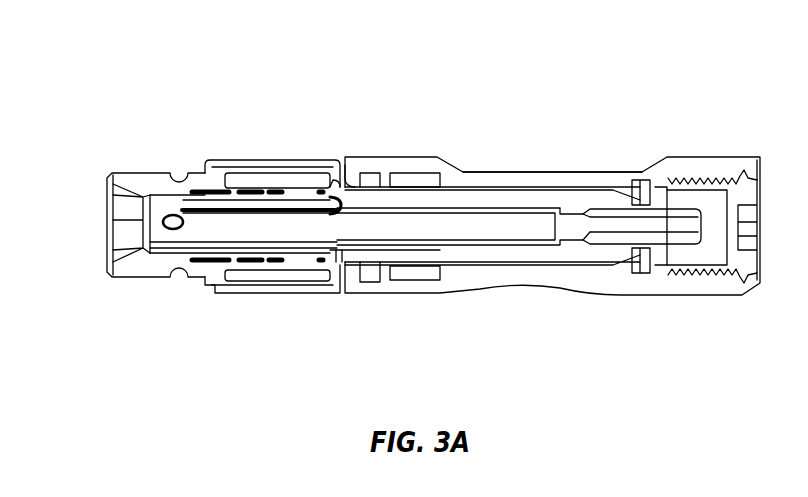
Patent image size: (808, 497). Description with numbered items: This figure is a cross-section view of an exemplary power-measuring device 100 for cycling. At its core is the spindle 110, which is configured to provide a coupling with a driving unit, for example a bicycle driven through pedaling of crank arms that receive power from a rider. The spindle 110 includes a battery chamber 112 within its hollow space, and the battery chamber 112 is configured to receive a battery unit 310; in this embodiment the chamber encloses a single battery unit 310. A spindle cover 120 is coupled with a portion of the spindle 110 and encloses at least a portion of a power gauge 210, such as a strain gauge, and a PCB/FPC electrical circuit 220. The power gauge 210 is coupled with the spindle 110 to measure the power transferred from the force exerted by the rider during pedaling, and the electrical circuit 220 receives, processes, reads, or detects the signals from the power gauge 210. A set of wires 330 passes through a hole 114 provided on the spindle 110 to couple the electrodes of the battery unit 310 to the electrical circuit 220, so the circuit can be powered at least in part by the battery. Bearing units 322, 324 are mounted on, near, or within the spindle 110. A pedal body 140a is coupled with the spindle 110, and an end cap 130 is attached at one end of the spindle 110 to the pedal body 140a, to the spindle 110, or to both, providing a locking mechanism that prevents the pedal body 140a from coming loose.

The power-measuring device 100 is at (769, 37).
The spindle 110 is at (202, 257).
The battery chamber 112 is at (160, 227).
The hole 114 is at (333, 203).
The spindle cover 120 is at (230, 160).
The end cap 130 is at (697, 268).
The pedal body 140a is at (540, 180).
The power gauge 210 is at (197, 167).
The electrical circuit 220 is at (250, 180).
The battery unit 310 is at (435, 233).
The bearing unit 322 is at (420, 275).
The bearing unit 324 is at (650, 265).
The set of wires 330 is at (172, 213).